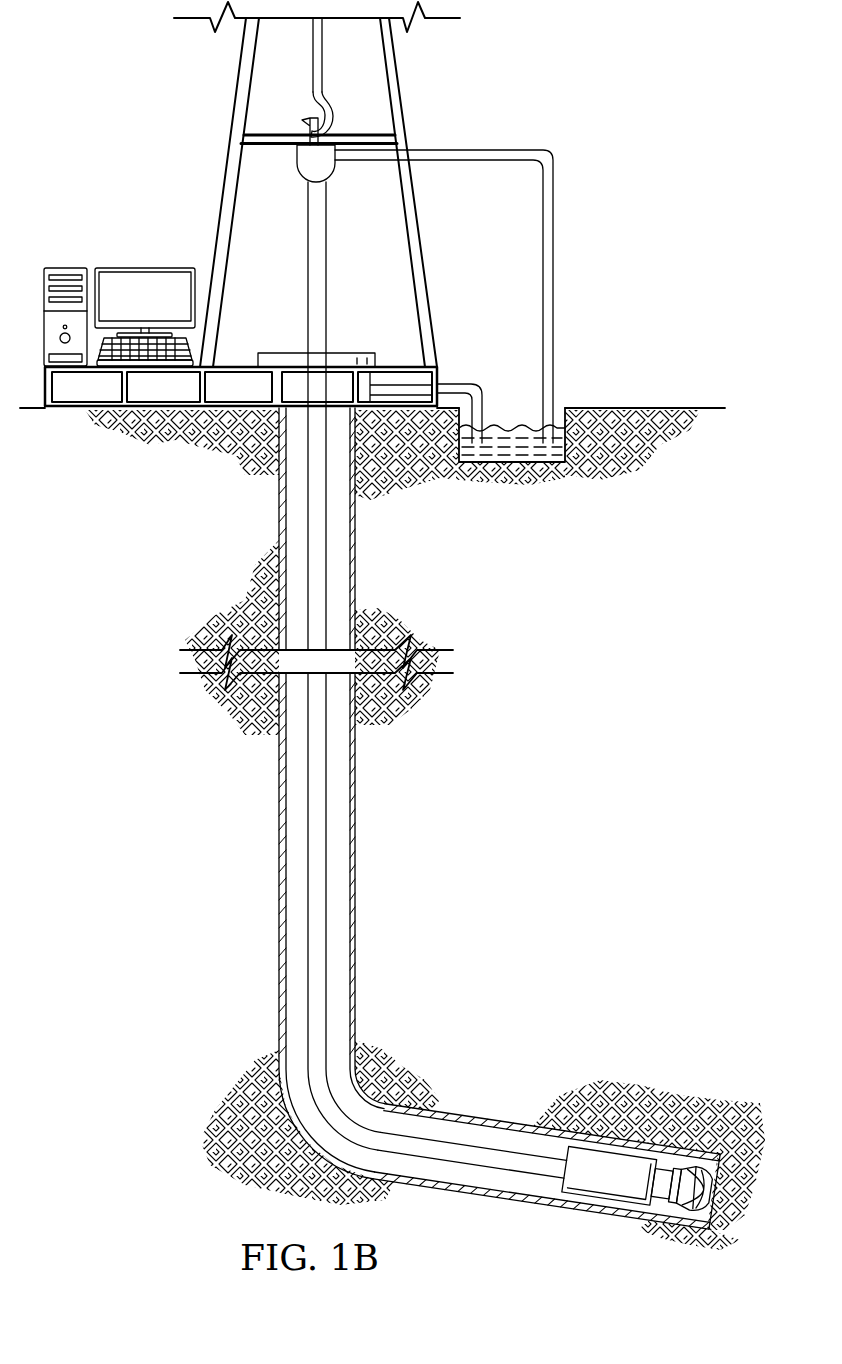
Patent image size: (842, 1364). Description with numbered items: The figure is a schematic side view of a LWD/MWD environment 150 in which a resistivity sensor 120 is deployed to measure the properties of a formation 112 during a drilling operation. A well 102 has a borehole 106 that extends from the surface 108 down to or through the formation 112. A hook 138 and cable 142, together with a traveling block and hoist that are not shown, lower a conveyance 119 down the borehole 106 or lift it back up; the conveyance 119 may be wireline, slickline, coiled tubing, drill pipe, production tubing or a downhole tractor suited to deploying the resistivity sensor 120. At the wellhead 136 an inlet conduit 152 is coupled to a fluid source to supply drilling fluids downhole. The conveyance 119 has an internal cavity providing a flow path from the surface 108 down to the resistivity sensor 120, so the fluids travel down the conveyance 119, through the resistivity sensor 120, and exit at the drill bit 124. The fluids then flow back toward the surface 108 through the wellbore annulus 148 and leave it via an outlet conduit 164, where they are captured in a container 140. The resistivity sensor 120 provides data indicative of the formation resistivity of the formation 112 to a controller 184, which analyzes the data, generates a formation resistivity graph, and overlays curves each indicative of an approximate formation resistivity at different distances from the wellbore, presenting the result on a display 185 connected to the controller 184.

The well 102 is at (348, 338).
The borehole 106 is at (355, 558).
The surface 108 is at (697, 408).
The formation 112 is at (518, 1073).
The conveyance 119 is at (315, 923).
The resistivity sensor 120 is at (607, 1197).
The drill bit 124 is at (698, 1218).
The wellhead 136 is at (280, 353).
The hook 138 is at (331, 117).
The container 140 is at (514, 462).
The cable 142 is at (312, 78).
The wellbore annulus 148 is at (296, 496).
The LWD/MWD environment 150 is at (158, 165).
The inlet conduit 152 is at (493, 150).
The outlet conduit 164 is at (456, 384).
The controller 184 is at (63, 268).
The display 185 is at (142, 268).